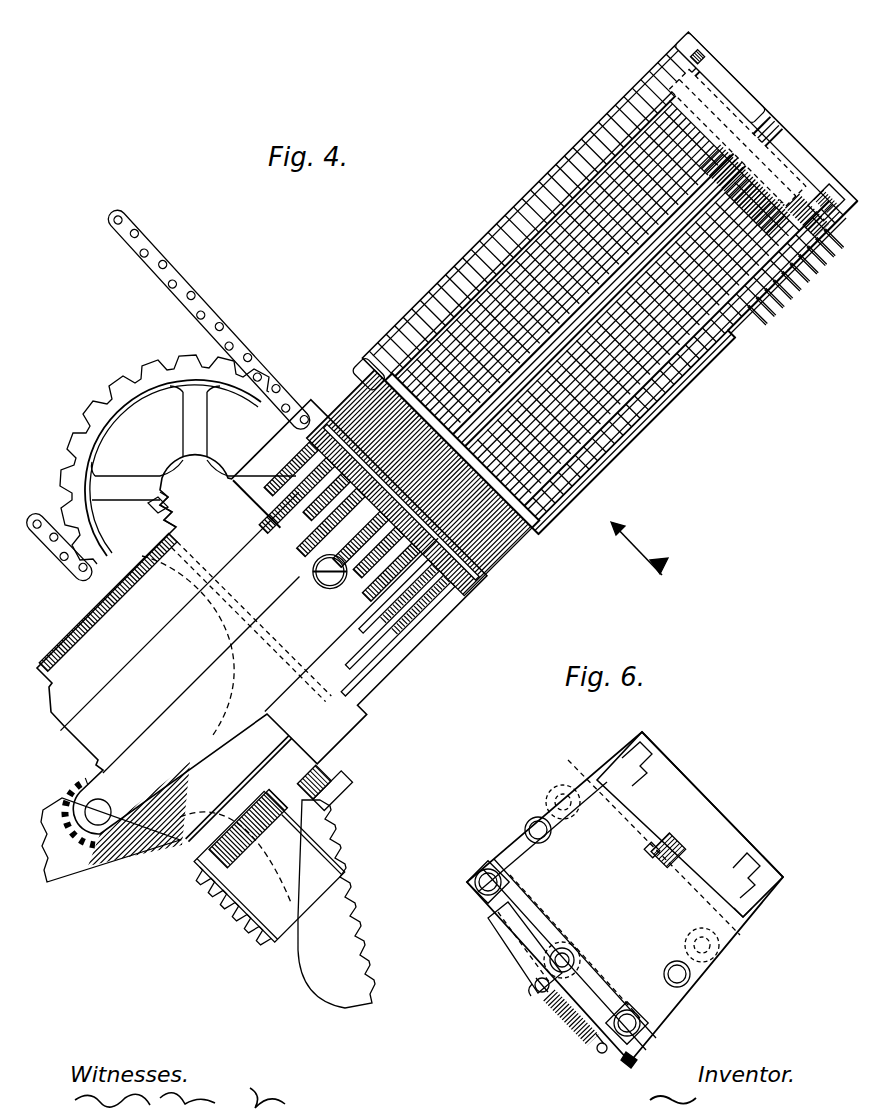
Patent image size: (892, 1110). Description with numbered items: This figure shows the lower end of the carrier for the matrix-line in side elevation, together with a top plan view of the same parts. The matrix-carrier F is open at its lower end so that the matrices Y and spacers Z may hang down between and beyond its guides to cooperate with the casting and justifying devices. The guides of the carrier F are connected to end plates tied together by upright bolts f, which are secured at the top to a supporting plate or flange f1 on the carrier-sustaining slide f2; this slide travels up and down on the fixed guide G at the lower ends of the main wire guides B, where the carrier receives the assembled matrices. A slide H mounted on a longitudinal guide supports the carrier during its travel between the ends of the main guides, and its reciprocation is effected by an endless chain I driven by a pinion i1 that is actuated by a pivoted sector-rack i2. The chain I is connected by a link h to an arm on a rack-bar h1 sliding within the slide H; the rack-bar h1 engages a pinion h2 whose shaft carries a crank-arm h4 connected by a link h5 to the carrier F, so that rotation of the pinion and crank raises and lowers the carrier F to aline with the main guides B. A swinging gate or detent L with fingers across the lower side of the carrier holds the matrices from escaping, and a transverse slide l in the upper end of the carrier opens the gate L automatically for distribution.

In FIG. 4, the matrix-carrier F is at (613, 283).
In FIG. 6, the matrix-carrier F is at (625, 897).
In FIG. 4, the supporting plate or flange f1 is at (676, 50).
In FIG. 4, the upright bolts f is at (706, 56).
In FIG. 6, the upright bolts f is at (478, 892).
In FIG. 4, the carrier-sustaining slide f2 is at (737, 113).
In FIG. 6, the carrier-sustaining slide f2 is at (750, 908).
In FIG. 4, the transverse slide l is at (836, 232).
In FIG. 6, the transverse slide l is at (629, 1064).
In FIG. 4, the wire guides B is at (746, 322).
In FIG. 4, the swinging gate or detent L is at (660, 412).
In FIG. 6, the swinging gate or detent L is at (588, 1048).
In FIG. 4, the matrices Y is at (357, 397).
In FIG. 4, the link h5 is at (324, 559).
In FIG. 4, the spacers Z is at (432, 607).
In FIG. 4, the slide H is at (255, 625).
In FIG. 4, the link h is at (112, 600).
In FIG. 4, the crank-arm h4 is at (217, 730).
In FIG. 4, the endless chain I is at (200, 294).
In FIG. 4, the pinion i1 is at (160, 492).
In FIG. 4, the sector-rack i2 is at (378, 830).
In FIG. 4, the pinion h2 is at (80, 792).
In FIG. 4, the rack-bar h1 is at (267, 869).
In FIG. 6, the fixed guide G is at (690, 824).